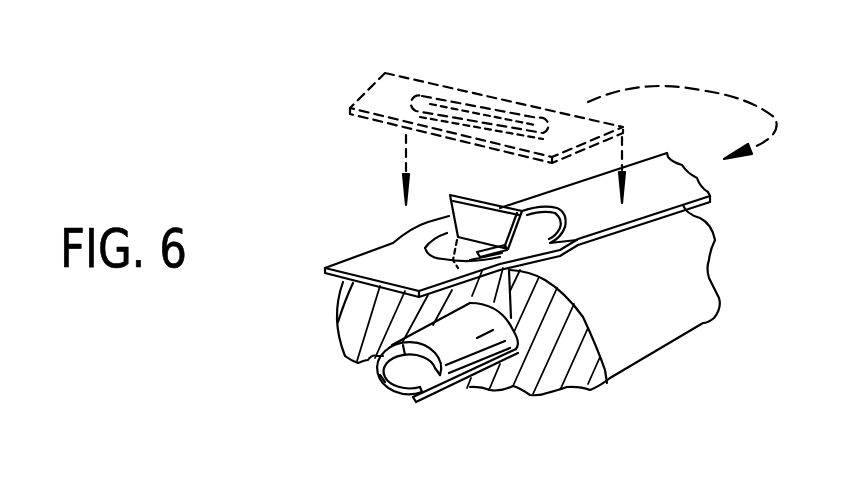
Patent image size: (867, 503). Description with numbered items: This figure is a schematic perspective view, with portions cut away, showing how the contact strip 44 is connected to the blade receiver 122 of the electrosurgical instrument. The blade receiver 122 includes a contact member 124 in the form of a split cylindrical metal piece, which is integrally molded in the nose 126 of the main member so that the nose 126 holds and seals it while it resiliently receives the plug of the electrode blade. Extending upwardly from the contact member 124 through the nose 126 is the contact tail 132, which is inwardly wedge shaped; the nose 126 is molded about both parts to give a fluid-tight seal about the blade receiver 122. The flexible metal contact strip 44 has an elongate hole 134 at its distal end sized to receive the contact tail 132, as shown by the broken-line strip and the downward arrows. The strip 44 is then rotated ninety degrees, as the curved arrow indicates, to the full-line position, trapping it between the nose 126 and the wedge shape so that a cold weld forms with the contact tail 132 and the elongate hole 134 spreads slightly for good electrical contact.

The contact strip 44 is at (432, 83).
The blade receiver 122 is at (467, 377).
The contact member 124 is at (380, 385).
The nose 126 is at (667, 325).
The contact tail 132 is at (477, 196).
The elongate hole 134 is at (484, 114).